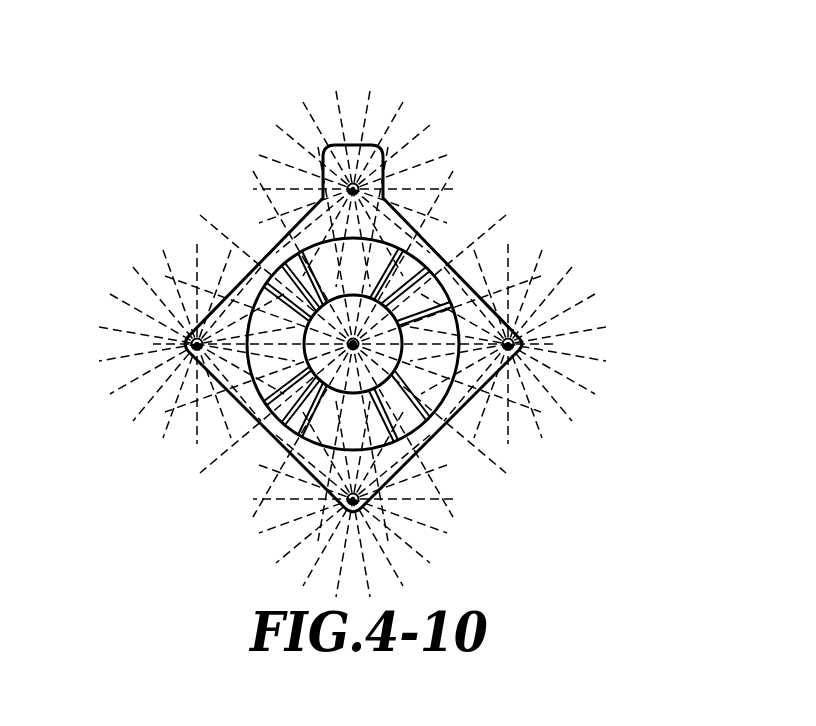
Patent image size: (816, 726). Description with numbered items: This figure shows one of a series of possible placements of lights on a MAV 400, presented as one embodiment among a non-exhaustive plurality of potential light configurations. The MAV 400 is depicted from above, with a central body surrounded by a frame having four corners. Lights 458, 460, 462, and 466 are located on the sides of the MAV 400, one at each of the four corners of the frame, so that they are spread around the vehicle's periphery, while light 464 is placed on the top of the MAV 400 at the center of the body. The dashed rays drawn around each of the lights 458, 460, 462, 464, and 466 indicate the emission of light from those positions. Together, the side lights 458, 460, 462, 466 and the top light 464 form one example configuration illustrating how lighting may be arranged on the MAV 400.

The MAV 400 is at (514, 185).
The light 458 is at (511, 337).
The light 460 is at (357, 508).
The light 462 is at (192, 333).
The light 464 is at (359, 345).
The light 466 is at (354, 188).